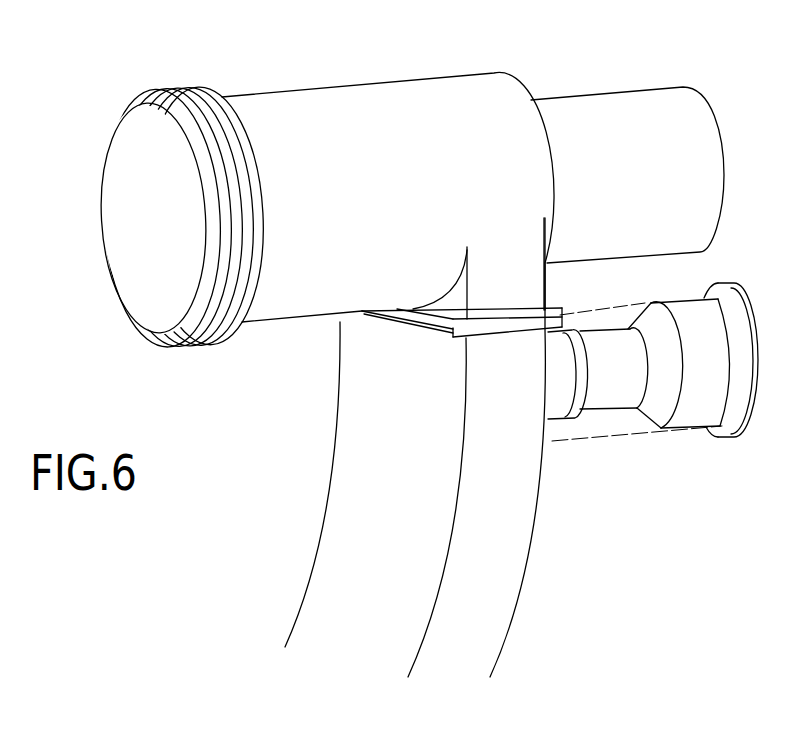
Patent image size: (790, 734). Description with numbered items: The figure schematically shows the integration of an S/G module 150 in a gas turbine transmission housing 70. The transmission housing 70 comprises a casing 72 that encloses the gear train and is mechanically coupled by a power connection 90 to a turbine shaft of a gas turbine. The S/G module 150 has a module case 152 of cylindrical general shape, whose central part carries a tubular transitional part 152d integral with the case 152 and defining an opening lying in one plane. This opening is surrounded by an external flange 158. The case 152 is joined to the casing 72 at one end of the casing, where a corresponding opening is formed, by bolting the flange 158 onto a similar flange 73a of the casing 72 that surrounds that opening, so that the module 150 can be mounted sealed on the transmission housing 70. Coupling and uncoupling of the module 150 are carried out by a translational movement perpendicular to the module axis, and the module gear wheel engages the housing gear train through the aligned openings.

The transmission housing 70 is at (372, 447).
The casing 72 is at (370, 478).
The flange 73a is at (436, 330).
The power connection 90 is at (588, 423).
The S/G module 150 is at (348, 85).
The module case 152 is at (409, 181).
The tubular transitional part 152d is at (507, 289).
The external flange 158 is at (406, 307).